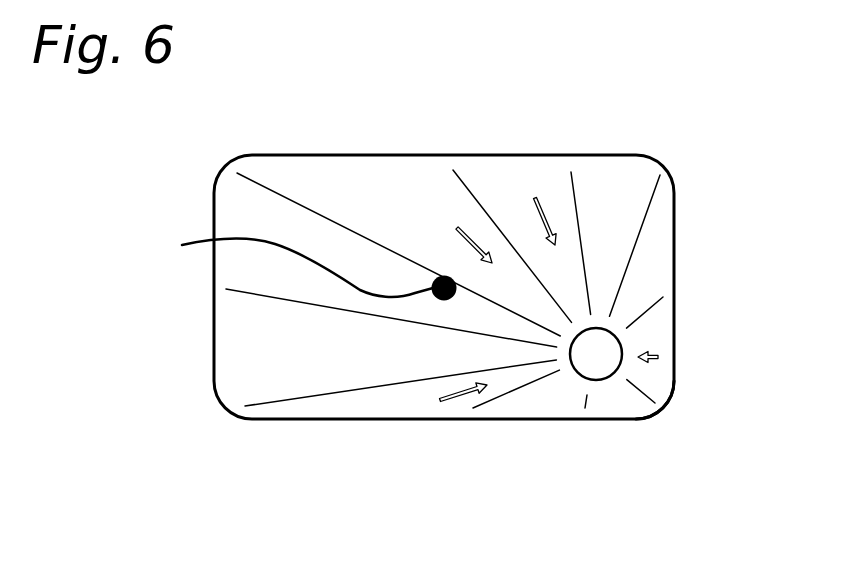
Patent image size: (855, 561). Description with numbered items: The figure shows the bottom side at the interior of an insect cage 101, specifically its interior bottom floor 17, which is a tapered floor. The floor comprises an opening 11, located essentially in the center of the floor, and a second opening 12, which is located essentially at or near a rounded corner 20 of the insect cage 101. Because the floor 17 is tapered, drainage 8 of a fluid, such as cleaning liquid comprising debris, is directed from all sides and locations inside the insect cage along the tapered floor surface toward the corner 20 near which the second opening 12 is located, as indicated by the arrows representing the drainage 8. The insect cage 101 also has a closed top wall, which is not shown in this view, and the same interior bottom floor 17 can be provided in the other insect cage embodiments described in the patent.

The insect cage 101 is at (674, 202).
The interior bottom floor 17 is at (236, 373).
The rounded corner 20 is at (663, 408).
The second opening 12 is at (574, 378).
The drainage 8 is at (458, 228).
The opening 11 is at (304, 267).